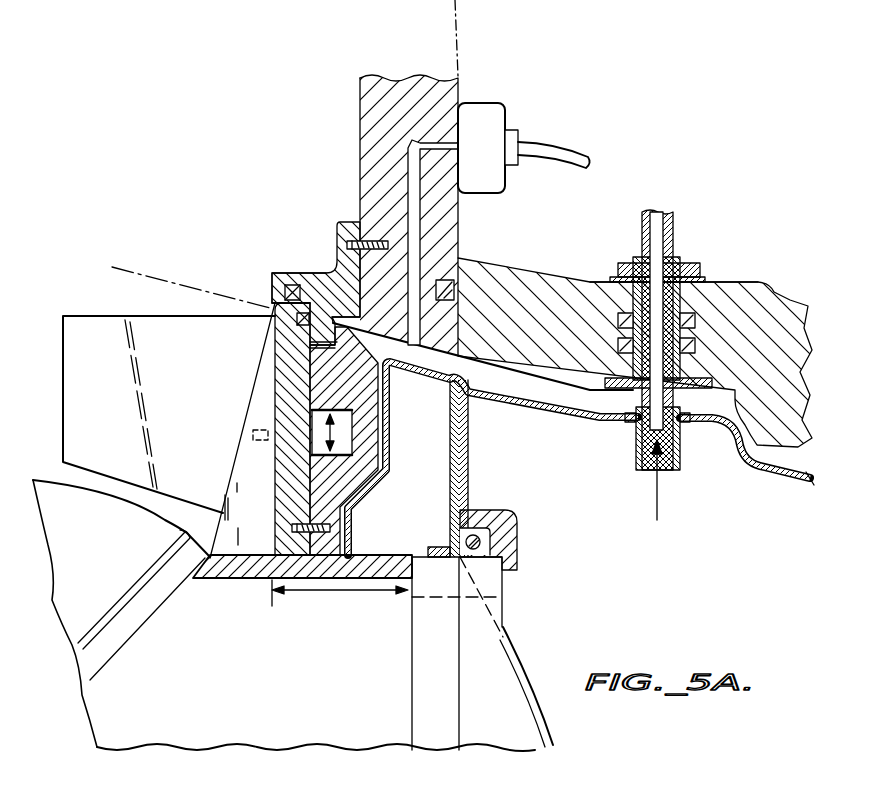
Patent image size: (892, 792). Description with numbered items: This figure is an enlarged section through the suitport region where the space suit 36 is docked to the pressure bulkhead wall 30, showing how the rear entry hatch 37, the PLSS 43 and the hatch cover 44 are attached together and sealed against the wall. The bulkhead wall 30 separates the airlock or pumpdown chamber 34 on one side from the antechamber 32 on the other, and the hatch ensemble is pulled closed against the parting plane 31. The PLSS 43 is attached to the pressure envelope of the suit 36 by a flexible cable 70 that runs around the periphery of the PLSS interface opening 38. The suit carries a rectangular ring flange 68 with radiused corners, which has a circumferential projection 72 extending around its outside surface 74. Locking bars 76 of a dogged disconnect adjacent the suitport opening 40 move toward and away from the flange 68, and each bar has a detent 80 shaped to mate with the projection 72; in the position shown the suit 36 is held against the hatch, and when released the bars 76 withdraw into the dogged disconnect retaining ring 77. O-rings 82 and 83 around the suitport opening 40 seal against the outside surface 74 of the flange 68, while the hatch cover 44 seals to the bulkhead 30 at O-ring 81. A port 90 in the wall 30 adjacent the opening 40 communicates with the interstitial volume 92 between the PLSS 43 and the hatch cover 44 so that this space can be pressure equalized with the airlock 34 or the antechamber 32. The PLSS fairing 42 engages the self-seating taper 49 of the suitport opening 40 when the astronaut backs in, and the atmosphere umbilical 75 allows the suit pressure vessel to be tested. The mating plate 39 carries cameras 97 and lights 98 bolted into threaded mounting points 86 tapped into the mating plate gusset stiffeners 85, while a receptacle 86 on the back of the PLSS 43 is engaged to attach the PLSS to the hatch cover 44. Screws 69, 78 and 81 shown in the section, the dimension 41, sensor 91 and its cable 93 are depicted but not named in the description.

The pressure bulkhead wall 30 is at (375, 148).
The parting plane 31 is at (470, 17).
The antechamber 32 is at (709, 149).
The airlock 34 is at (245, 144).
The space suit 36 is at (252, 582).
The rear entry hatch 37 is at (514, 660).
The PLSS interface opening 38 is at (406, 626).
The mating plate 39 is at (276, 462).
The suitport opening 40 is at (484, 302).
The dimension 41 is at (362, 592).
The PLSS fairing 42 is at (372, 492).
The PLSS 43 is at (426, 543).
The hatch cover 44 is at (768, 308).
The self-seating taper 49 is at (120, 270).
The flange 68 is at (312, 276).
The screw 69 is at (340, 244).
The flexible cable 70 is at (482, 542).
The circumferential projection 72 is at (336, 233).
The outside surface 74 is at (284, 300).
The atmosphere umbilical 75 is at (690, 246).
The locking bars 76 is at (294, 392).
The dogged disconnect retaining ring 77 is at (367, 456).
The screw 78 is at (333, 528).
The detent 80 is at (312, 341).
The O-ring 81 is at (457, 290).
The O-ring 82 is at (284, 286).
The O-ring 83 is at (299, 319).
The mating plate gusset stiffeners 85 is at (248, 559).
The receptacle 86 is at (267, 433).
The port 90 is at (420, 222).
The sensor 91 is at (500, 118).
The interstitial volume 92 is at (553, 397).
The cable 93 is at (545, 148).
The cameras 97 is at (100, 316).
The lights 98 is at (152, 320).